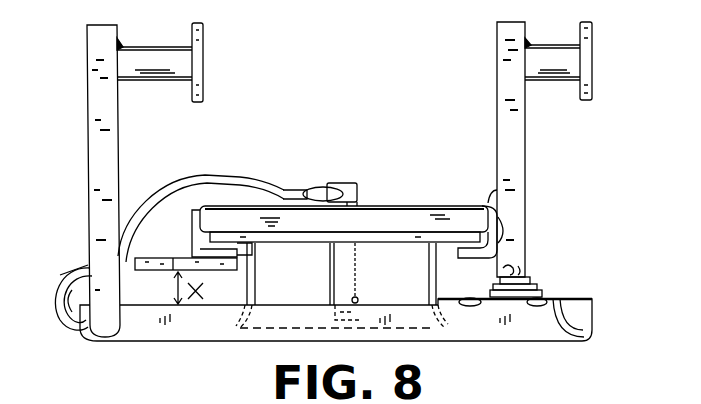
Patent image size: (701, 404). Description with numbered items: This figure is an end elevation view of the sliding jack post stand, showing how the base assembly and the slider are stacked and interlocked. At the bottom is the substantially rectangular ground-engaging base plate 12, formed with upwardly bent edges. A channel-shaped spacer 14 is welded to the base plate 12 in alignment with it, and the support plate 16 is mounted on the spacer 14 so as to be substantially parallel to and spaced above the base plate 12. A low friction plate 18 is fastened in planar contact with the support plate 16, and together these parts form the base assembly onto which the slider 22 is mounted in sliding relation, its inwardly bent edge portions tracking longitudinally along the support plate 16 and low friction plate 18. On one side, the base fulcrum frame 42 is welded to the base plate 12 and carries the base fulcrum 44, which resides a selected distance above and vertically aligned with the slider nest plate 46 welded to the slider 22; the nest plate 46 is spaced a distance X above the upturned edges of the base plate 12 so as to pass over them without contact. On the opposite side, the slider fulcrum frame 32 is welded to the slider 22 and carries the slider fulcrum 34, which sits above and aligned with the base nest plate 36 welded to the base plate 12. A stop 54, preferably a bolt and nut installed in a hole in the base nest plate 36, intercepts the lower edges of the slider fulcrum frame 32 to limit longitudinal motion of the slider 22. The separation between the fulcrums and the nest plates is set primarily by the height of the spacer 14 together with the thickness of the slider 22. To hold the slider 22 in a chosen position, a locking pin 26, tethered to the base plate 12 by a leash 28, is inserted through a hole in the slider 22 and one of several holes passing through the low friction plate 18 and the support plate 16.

The base plate 12 is at (147, 337).
The channel-shaped spacer 14 is at (428, 280).
The support plate 16 is at (305, 243).
The low friction plate 18 is at (396, 218).
The slider 22 is at (427, 205).
The locking pin 26 is at (357, 186).
The leash 28 is at (204, 177).
The slider fulcrum frame 32 is at (497, 24).
The slider fulcrum 34 is at (558, 45).
The base nest plate 36 is at (581, 298).
The base fulcrum frame 42 is at (88, 25).
The base fulcrum 44 is at (153, 47).
The slider nest plate 46 is at (170, 258).
The stop 54 is at (533, 283).